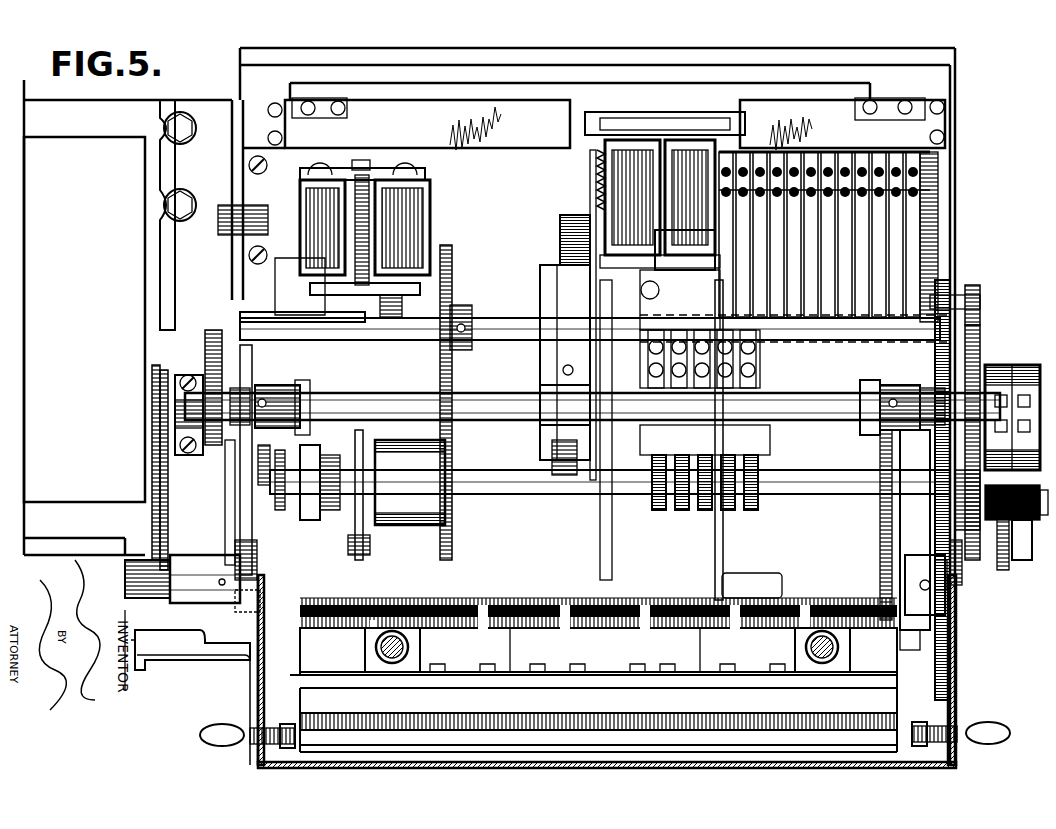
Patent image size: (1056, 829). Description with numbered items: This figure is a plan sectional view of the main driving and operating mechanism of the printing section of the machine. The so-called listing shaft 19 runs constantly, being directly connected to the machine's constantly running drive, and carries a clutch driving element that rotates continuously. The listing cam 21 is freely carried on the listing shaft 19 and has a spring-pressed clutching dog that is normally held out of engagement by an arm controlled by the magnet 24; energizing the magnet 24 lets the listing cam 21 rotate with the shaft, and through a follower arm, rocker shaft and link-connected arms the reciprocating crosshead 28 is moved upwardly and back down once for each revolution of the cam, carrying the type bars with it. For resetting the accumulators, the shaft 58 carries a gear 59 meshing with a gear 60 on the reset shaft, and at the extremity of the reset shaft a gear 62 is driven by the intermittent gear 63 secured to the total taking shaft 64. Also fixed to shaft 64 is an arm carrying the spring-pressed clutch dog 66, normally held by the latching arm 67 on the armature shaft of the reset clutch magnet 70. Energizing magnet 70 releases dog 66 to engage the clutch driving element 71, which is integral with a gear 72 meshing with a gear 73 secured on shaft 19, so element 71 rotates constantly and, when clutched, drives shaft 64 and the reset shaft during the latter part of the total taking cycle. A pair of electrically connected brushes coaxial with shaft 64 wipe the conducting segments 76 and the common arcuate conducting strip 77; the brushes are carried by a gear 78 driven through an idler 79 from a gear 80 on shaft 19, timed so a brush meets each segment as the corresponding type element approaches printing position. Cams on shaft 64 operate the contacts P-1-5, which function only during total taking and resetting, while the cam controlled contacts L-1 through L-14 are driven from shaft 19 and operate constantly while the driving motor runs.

The listing shaft 19 is at (505, 330).
The listing cam 21 is at (565, 222).
The magnet 24 is at (615, 175).
The crosshead 28 is at (560, 645).
The shaft 58 is at (168, 503).
The gear 59 is at (162, 483).
The gear 60 is at (170, 618).
The gear 62 is at (240, 548).
The intermittent gear 63 is at (240, 505).
The total taking shaft 64 is at (510, 500).
The clutch dog 66 is at (375, 540).
The latching arm 67 is at (368, 378).
The reset clutch magnet 70 is at (410, 228).
The clutch driving element 71 is at (367, 540).
The gear 72 is at (462, 540).
The gear 73 is at (465, 285).
The conducting segments 76 is at (1005, 380).
The common arcuate conducting strip 77 is at (1000, 575).
The gear 78 is at (970, 560).
The idler 79 is at (985, 350).
The gear 80 is at (985, 278).
The cam controlled contact L-1 is at (700, 318).
The cam controlled contact L-14 is at (918, 312).
The cam controlled contacts P-1-5 is at (745, 505).